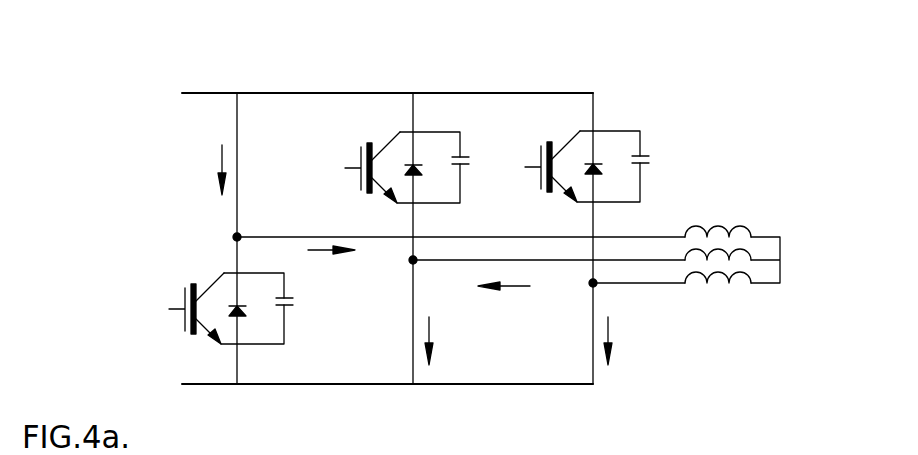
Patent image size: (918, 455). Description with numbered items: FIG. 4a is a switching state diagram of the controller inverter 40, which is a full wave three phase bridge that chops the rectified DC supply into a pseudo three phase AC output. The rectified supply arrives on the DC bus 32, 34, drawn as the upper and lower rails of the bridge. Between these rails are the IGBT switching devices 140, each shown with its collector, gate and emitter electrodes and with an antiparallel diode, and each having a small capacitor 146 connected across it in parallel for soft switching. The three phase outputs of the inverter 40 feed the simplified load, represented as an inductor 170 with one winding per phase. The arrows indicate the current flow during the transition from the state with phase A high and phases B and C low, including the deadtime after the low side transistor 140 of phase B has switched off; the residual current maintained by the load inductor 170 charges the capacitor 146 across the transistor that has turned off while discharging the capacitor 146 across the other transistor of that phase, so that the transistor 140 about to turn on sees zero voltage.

The DC bus 32 is at (207, 93).
The DC bus 34 is at (190, 381).
The controlled inverter 40 is at (288, 68).
The IGBT device 140 is at (385, 138).
The capacitor 146 is at (472, 145).
The inductor 170 is at (725, 225).